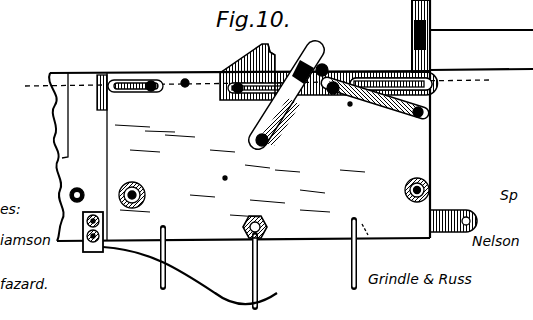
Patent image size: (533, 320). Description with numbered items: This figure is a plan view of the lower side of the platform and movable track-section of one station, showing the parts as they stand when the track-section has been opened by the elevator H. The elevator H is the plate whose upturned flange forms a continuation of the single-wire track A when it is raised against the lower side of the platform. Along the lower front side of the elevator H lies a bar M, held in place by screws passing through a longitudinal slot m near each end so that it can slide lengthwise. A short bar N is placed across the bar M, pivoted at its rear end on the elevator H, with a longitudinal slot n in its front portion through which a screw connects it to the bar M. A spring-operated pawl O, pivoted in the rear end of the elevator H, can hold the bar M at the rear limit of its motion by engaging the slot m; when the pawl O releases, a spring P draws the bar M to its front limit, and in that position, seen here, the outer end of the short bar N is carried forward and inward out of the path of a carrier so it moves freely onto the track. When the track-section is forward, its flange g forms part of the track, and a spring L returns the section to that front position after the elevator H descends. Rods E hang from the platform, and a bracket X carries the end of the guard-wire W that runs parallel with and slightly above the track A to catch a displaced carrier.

The elevator H is at (240, 156).
The bracket X is at (409, 119).
The guard-wire W is at (481, 21).
The single-wire track A is at (481, 61).
The spring-operated pawl O is at (212, 112).
The longitudinal slot m is at (232, 110).
The bar M is at (356, 74).
The spring P is at (375, 106).
The short bar N is at (285, 98).
The longitudinal slot n is at (352, 112).
The rods E is at (273, 213).
The upturned flange g is at (351, 267).
The screw k is at (360, 219).
The spring L is at (190, 275).